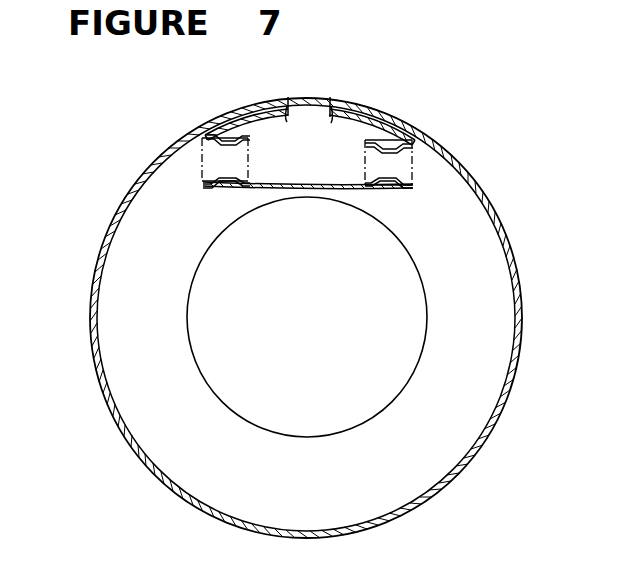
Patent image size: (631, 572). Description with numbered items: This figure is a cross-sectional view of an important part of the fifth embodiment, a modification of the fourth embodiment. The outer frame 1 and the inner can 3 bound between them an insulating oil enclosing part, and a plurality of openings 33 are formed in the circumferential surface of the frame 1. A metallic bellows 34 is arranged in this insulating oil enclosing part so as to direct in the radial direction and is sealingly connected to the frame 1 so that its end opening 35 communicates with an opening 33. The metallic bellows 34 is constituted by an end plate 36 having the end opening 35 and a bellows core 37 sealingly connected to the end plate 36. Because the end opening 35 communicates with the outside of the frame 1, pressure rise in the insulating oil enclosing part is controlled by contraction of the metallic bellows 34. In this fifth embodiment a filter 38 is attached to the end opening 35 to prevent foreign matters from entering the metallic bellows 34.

The frame 1 is at (137, 188).
The can 3 is at (188, 327).
The opening 33 is at (330, 100).
The metallic bellows 34 is at (365, 108).
The end opening 35 is at (270, 122).
The end plate 36 is at (393, 127).
The bellows core 37 is at (396, 147).
The filter 38 is at (300, 100).